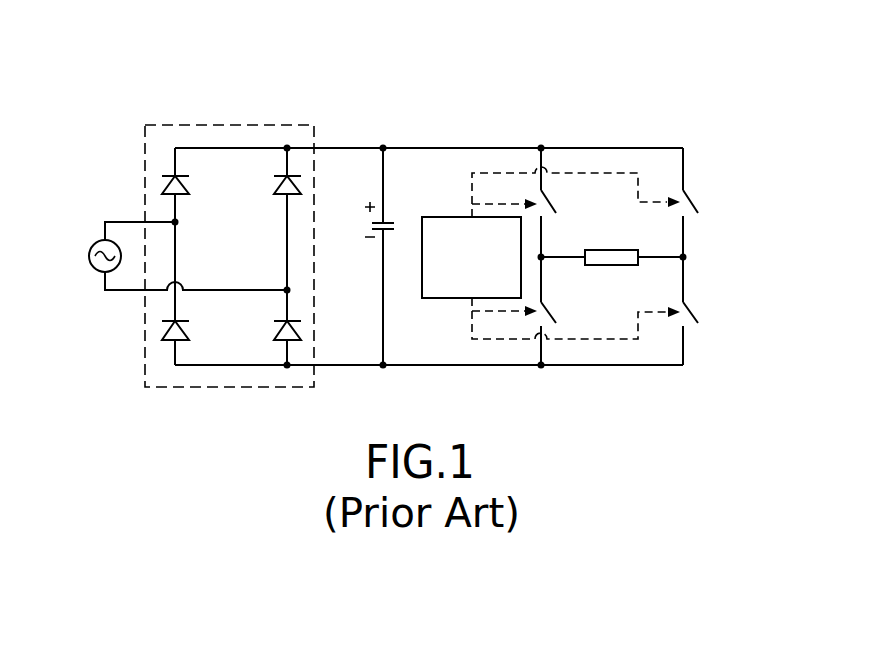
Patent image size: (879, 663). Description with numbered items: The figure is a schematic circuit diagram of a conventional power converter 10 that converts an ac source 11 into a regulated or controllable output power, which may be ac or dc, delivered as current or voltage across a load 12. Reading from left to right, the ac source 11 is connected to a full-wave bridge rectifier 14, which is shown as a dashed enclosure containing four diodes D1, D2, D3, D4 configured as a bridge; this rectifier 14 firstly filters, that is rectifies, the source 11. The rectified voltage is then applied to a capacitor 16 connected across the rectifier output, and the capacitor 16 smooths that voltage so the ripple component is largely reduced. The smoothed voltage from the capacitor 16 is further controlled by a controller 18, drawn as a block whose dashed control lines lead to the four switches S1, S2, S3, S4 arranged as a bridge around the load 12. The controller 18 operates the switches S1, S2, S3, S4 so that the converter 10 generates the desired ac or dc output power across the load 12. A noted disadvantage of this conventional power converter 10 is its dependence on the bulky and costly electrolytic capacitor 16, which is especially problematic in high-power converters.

The power converter 10 is at (389, 212).
The ac source 11 is at (90, 268).
The load 12 is at (602, 250).
The full-wave bridge rectifier 14 is at (233, 270).
The capacitor 16 is at (390, 230).
The controller 18 is at (445, 298).
The diode D1 is at (190, 187).
The diode D2 is at (190, 332).
The diode D3 is at (275, 187).
The diode D4 is at (275, 332).
The switch S1 is at (555, 202).
The switch S2 is at (562, 311).
The switch S3 is at (698, 202).
The switch S4 is at (706, 311).